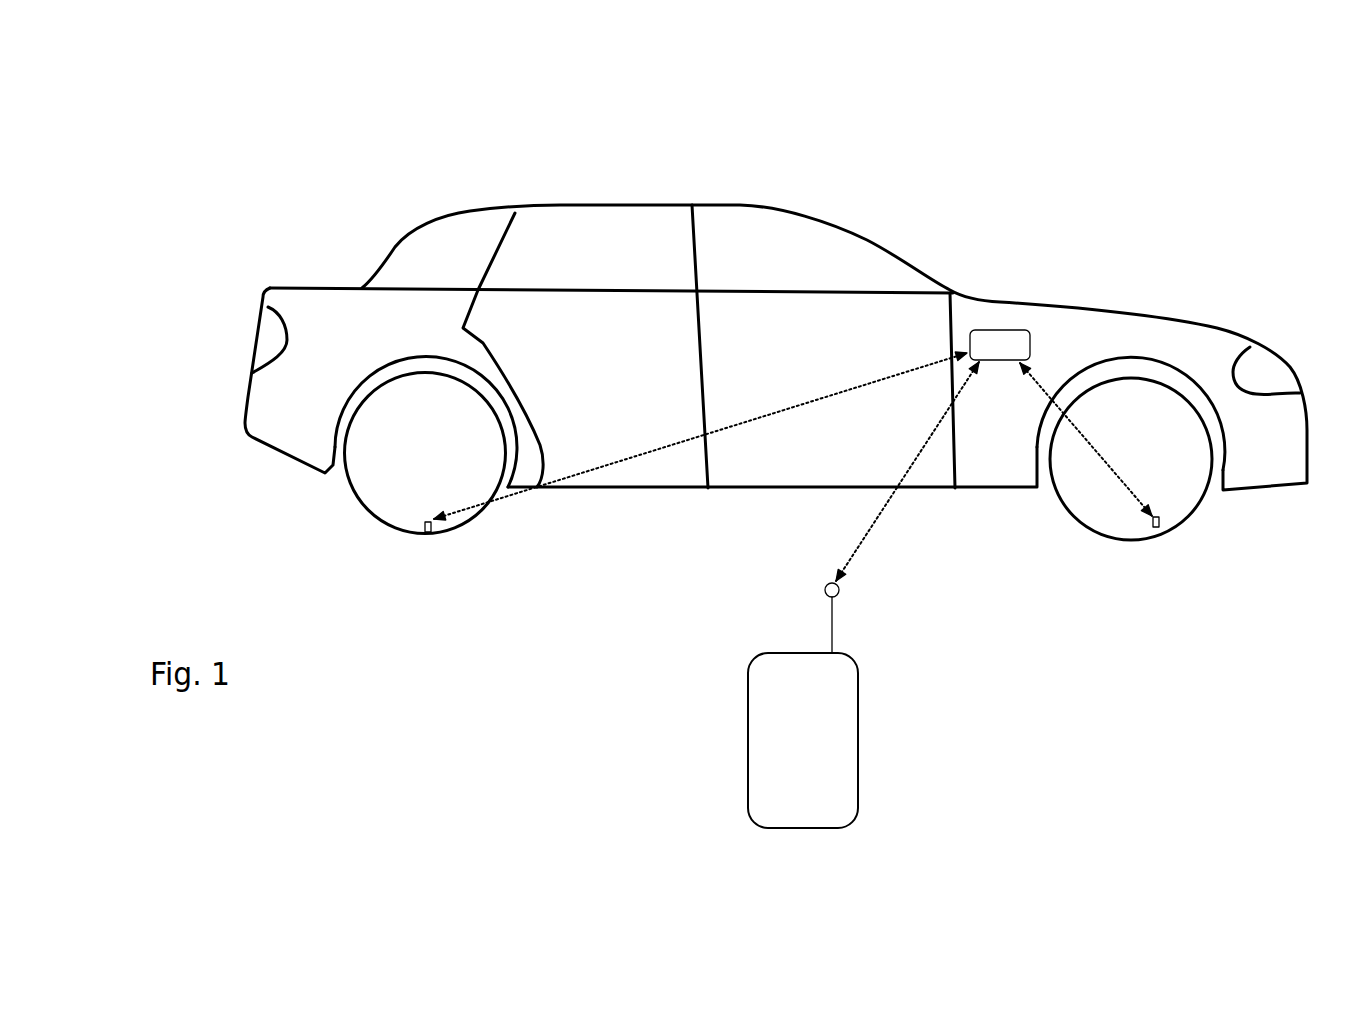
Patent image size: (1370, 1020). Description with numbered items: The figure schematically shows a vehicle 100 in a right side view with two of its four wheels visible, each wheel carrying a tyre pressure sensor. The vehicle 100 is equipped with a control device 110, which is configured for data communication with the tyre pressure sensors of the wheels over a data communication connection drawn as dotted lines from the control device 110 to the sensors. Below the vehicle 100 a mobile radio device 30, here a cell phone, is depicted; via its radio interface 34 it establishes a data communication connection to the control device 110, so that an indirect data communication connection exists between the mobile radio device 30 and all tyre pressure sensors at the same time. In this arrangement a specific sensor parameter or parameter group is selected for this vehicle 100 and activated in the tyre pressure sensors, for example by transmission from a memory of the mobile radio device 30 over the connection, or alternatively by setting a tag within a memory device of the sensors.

The vehicle 100 is at (798, 316).
The control device 110 is at (990, 330).
The mobile radio device 30 is at (880, 773).
The radio interface 34 is at (840, 588).